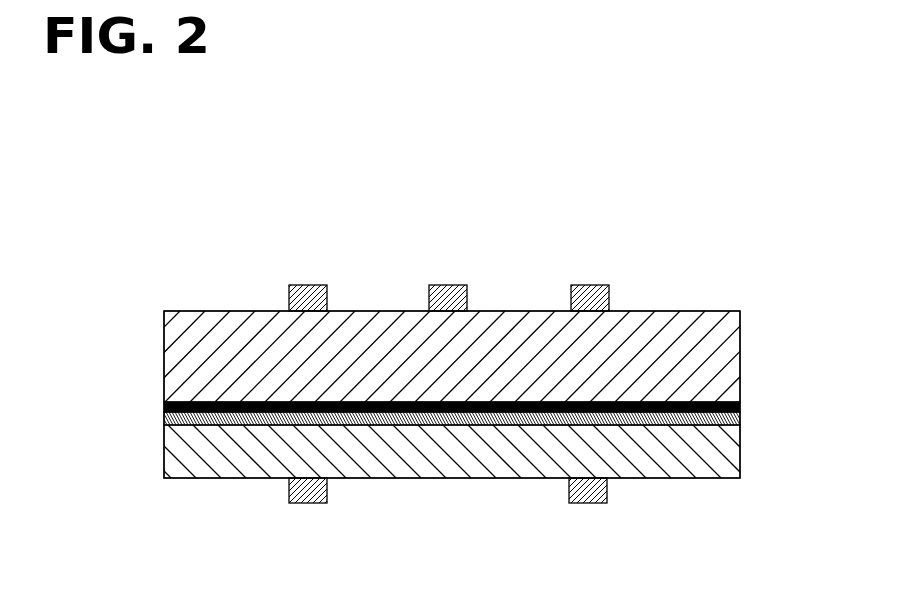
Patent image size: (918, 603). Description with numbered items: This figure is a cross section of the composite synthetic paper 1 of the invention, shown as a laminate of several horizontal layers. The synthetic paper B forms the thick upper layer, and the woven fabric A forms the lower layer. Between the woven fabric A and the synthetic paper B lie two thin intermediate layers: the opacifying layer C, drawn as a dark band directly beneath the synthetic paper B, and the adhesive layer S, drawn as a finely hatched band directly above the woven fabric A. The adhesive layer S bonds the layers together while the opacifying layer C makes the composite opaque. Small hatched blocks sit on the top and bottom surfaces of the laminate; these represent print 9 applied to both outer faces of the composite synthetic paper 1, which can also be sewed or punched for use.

The composite synthetic paper 1 is at (546, 190).
The print 9 is at (313, 285).
The synthetic paper B is at (740, 355).
The opacifying layer C is at (740, 403).
The adhesive layer S is at (740, 425).
The woven fabric A is at (740, 455).